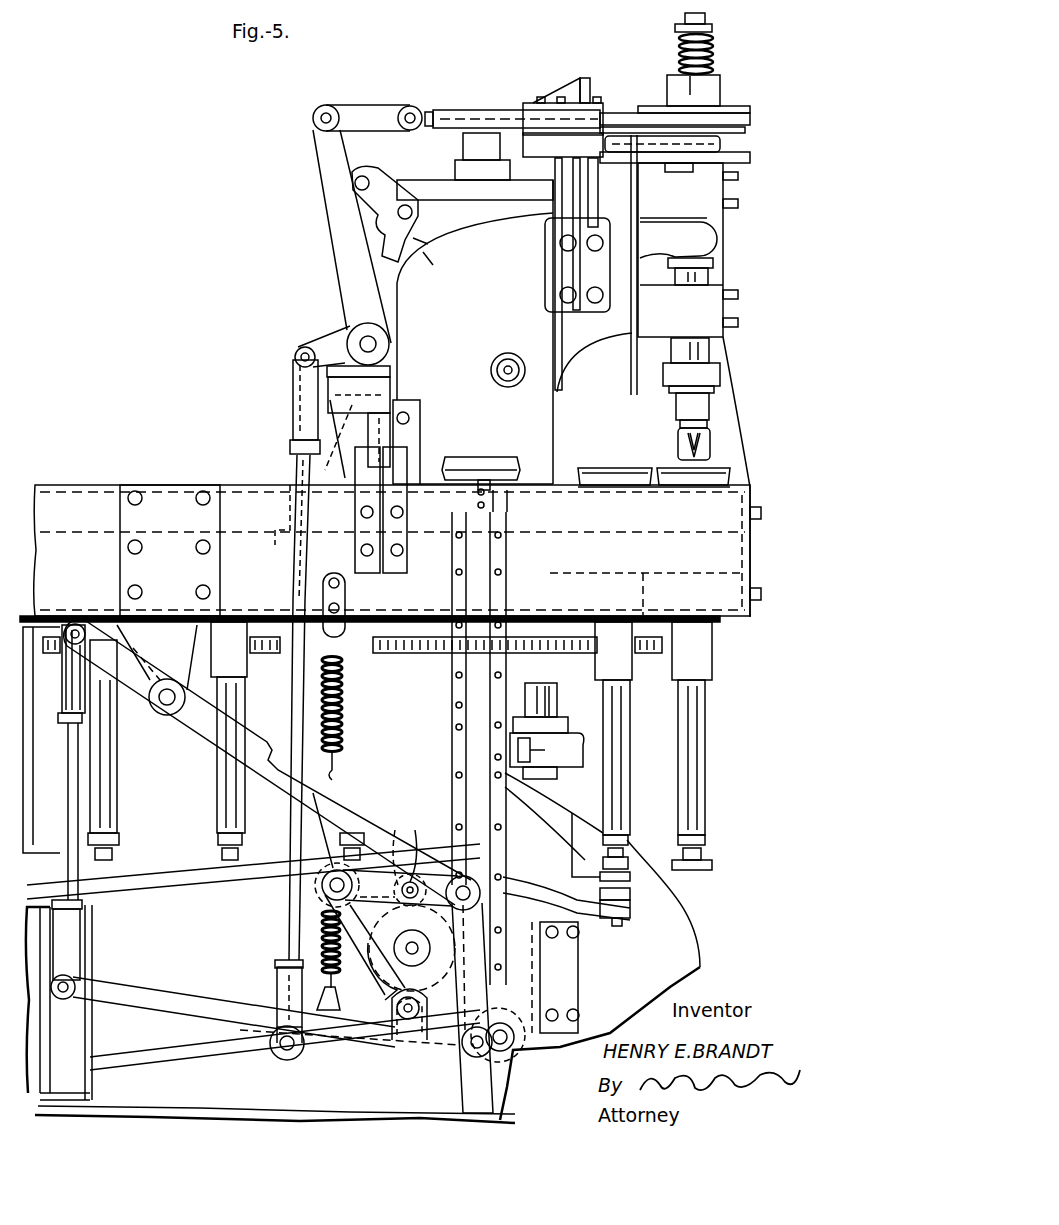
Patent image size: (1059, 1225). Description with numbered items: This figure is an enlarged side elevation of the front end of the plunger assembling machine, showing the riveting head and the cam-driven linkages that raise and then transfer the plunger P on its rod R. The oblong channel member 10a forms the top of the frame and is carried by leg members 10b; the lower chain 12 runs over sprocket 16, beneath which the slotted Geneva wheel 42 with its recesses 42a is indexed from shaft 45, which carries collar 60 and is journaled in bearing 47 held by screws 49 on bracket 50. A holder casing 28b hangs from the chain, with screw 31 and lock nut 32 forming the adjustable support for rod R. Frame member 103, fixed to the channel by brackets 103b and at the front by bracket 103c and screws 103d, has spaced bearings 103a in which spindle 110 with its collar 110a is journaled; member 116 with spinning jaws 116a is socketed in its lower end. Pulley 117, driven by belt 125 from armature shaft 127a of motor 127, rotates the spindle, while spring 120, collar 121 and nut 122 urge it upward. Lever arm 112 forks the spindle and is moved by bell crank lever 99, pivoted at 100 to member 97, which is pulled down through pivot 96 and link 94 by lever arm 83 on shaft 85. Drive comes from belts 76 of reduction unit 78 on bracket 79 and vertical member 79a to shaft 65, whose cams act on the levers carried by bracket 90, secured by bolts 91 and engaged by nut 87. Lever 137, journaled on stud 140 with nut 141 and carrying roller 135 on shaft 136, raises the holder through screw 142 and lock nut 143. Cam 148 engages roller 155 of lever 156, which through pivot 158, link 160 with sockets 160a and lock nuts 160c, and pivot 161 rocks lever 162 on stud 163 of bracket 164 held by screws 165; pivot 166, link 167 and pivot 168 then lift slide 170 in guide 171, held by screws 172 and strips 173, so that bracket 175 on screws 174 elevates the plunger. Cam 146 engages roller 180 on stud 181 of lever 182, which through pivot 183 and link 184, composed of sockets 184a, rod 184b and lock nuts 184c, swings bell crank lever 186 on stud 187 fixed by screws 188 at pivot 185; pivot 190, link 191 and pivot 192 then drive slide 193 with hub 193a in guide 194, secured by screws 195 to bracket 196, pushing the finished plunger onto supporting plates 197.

The pivot 190 is at (318, 111).
The link 191 is at (360, 106).
The pivot 192 is at (413, 106).
The hub 193a is at (433, 112).
The slide 193 is at (470, 110).
The screws 195 is at (596, 100).
The belt 125 is at (752, 120).
The pulley 117 is at (722, 96).
The spindle 110 is at (690, 80).
The coiled compression spring 120 is at (714, 58).
The collar or washer 121 is at (714, 28).
The nut 122 is at (707, 17).
The plunger P is at (722, 144).
The supporting plates 197 is at (696, 161).
The bearings 103a is at (705, 213).
The lever arm 112 is at (706, 241).
The collar 110a is at (715, 265).
The headed screws 103d is at (742, 205).
The bracket 103c is at (740, 406).
The member 116 is at (676, 414).
The spinning or riveting jaws 116a is at (680, 441).
The frame member 103 is at (553, 439).
The motor 127 is at (448, 200).
The bell crank lever 99 is at (440, 218).
The guide 194 is at (463, 148).
The armature shaft 127a is at (497, 148).
The bracket 196 is at (588, 170).
The plunger rod R is at (615, 395).
The member 97 is at (378, 192).
The pivot 96 is at (354, 184).
The pivot 100 is at (398, 214).
The bell crank lever 186 is at (346, 300).
The stud 187 is at (389, 339).
The screws 188 is at (392, 369).
The pivot 185 is at (295, 355).
The end socket members 184a is at (293, 396).
The lock nuts 184c is at (290, 445).
The rod 184b is at (297, 468).
The link 184 is at (291, 829).
The link 94 is at (300, 470).
The brackets 103b is at (420, 436).
The channel member 10a is at (71, 494).
The bracket 164 is at (120, 517).
The screws 165 is at (141, 493).
The pivot 161 is at (76, 623).
The sprocket 16 is at (665, 651).
The link chain 12 is at (408, 655).
The casing 28b is at (707, 788).
The Geneva wheel 42 is at (642, 688).
The lock nut 32 is at (628, 838).
The headed screw 31 is at (628, 860).
The headed screw 142 is at (632, 877).
The lock nut 143 is at (632, 896).
The slots or recesses 42a is at (542, 684).
The shaft 45 is at (551, 712).
The collar 60 is at (568, 730).
The bolts or screws 49 is at (536, 749).
The bearing 47 is at (560, 766).
The plate or bracket 50 is at (563, 801).
The lever 137 is at (563, 900).
The leg members 10b is at (697, 941).
The slide 170 is at (507, 549).
The bracket 175 is at (458, 505).
The guide member 171 is at (452, 706).
The screws 172 is at (459, 728).
The retaining strips 173 is at (498, 757).
The headed screws 174 is at (490, 506).
The reduction gearing unit 78 is at (37, 935).
The vertical member 79a is at (80, 1026).
The bracket 79 is at (120, 1108).
The belts 76 is at (157, 878).
The link 160 is at (78, 803).
The end socket members 160a is at (76, 698).
The lock nuts 160c is at (82, 905).
The stud 163 is at (168, 705).
The lever 162 is at (208, 735).
The pivot 158 is at (73, 982).
The lever 156 is at (182, 996).
The lever arm 83 is at (279, 1020).
The pivot 183 is at (287, 1061).
The lever 182 is at (362, 1047).
The shaft or stud 140 is at (321, 892).
The nut 141 is at (324, 895).
The bracket 90 is at (322, 901).
The bolts 91 is at (580, 1015).
The link 167 is at (514, 990).
The pivot 168 is at (474, 1052).
The shaft 85 is at (503, 1050).
The nut 87 is at (513, 1050).
The shaft or stud 181 is at (431, 1006).
The cam roller 180 is at (393, 1007).
The roller 155 is at (397, 987).
The cam 146 is at (390, 972).
The shaft 65 is at (410, 942).
The roller 135 is at (400, 830).
The short shaft 136 is at (410, 848).
The cam 148 is at (411, 882).
The pivot 166 is at (478, 884).